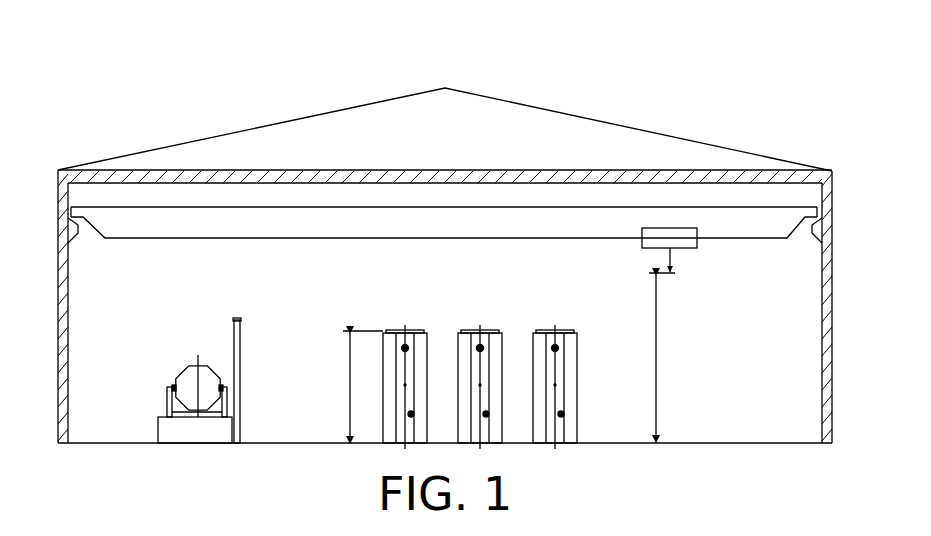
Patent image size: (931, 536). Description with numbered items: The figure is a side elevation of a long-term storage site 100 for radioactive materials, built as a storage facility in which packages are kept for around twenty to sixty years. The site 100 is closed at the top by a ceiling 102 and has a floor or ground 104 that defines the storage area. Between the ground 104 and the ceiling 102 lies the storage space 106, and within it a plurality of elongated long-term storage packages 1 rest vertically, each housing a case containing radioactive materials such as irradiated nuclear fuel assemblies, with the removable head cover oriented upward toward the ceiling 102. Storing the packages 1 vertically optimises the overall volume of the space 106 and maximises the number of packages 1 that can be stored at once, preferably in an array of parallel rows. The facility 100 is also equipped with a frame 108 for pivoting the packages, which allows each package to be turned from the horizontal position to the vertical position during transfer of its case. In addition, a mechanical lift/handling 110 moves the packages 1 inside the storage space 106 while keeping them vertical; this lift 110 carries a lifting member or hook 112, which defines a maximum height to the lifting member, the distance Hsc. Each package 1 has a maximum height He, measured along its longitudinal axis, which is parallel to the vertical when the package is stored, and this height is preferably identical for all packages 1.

The long-term storage site 100 is at (724, 75).
The ceiling 102 is at (693, 177).
The storage space 106 is at (747, 266).
The mechanical lift/handling 110 is at (475, 237).
The lifting member or hook 112 is at (673, 271).
The frame for pivoting the packages 108 is at (241, 324).
The floor or ground 104 is at (804, 443).
The long-term storage package 1 is at (421, 329).
The maximum height of package He is at (350, 383).
The maximum height to lifting member Hsc is at (657, 358).